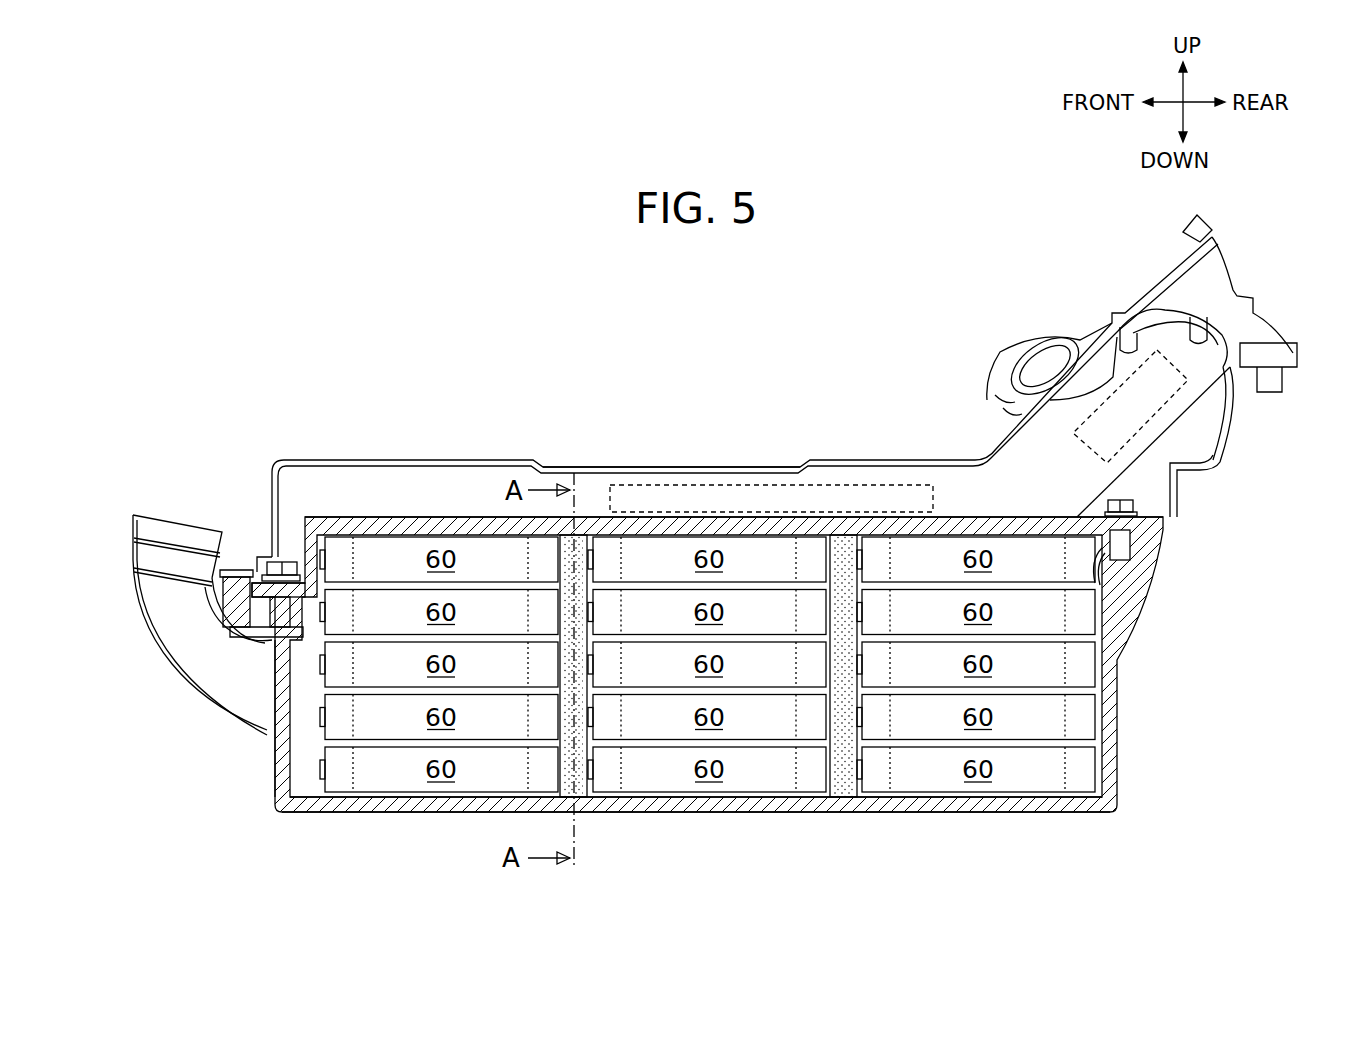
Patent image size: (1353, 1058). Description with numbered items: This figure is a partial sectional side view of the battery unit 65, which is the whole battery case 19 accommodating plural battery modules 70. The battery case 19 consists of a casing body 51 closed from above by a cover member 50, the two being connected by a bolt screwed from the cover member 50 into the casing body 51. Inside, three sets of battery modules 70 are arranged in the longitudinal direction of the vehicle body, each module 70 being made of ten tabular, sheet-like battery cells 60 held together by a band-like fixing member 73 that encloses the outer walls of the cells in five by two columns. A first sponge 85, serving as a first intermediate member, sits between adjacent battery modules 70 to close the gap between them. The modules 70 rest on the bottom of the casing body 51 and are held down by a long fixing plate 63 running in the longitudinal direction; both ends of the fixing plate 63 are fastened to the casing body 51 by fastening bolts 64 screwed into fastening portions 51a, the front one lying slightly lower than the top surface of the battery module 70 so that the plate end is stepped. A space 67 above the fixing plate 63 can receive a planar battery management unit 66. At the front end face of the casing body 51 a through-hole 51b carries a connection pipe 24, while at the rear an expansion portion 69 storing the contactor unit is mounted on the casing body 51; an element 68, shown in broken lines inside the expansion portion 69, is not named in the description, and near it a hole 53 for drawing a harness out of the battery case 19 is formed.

The battery case 19 is at (452, 457).
The connection pipe 24 is at (198, 675).
The cover member 50 is at (632, 465).
The casing body 51 is at (655, 800).
The fastening portion 51a is at (225, 600).
The through-hole 51b is at (268, 695).
The hole 53 is at (1043, 376).
The battery cell 60 is at (707, 664).
The fixing plate 63 is at (718, 515).
The fastening bolt 64 is at (287, 558).
The battery unit 65 is at (518, 350).
The battery management unit 66 is at (880, 485).
The space 67 is at (378, 488).
The connector 68 is at (1157, 413).
The expansion portion 69 is at (1242, 410).
The battery module 70 is at (425, 806).
The fixing member 73 is at (372, 800).
The first sponge 85 is at (576, 800).